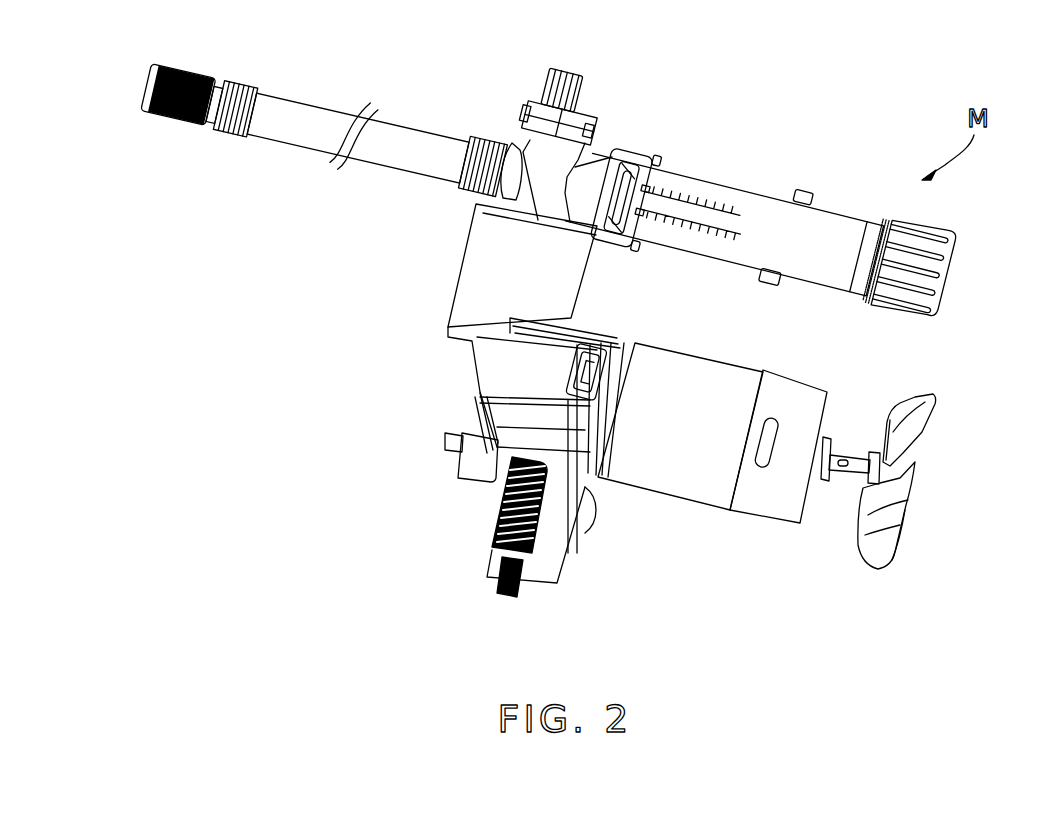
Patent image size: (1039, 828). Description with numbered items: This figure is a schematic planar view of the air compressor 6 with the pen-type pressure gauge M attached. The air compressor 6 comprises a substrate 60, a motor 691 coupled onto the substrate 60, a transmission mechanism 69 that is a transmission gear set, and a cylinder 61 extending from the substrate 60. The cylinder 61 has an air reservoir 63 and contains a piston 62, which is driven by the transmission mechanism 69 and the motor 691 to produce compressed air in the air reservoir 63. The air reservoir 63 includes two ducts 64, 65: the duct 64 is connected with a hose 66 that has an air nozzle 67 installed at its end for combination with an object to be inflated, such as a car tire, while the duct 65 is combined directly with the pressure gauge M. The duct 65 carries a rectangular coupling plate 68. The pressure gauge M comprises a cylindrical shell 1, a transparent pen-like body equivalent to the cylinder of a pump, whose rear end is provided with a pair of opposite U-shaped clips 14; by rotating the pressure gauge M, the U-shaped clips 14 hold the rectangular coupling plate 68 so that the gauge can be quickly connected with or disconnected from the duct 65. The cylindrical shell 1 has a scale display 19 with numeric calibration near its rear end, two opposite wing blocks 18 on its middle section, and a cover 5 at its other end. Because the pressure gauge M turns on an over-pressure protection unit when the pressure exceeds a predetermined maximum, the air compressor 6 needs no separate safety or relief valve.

The cylindrical shell 1 is at (758, 223).
The cover 5 is at (905, 300).
The air compressor 6 is at (500, 370).
The U-shaped clips 14 is at (638, 137).
The wing blocks 18 is at (808, 195).
The scale display 19 is at (692, 238).
The substrate 60 is at (560, 510).
The cylinder 61 is at (480, 283).
The piston 62 is at (473, 418).
The air reservoir 63 is at (540, 157).
The duct 64 is at (505, 140).
The duct 65 is at (597, 187).
The hose 66 is at (290, 128).
The air nozzle 67 is at (160, 118).
The rectangular coupling plate 68 is at (612, 155).
The transmission mechanism 69 is at (497, 530).
The motor 691 is at (697, 470).